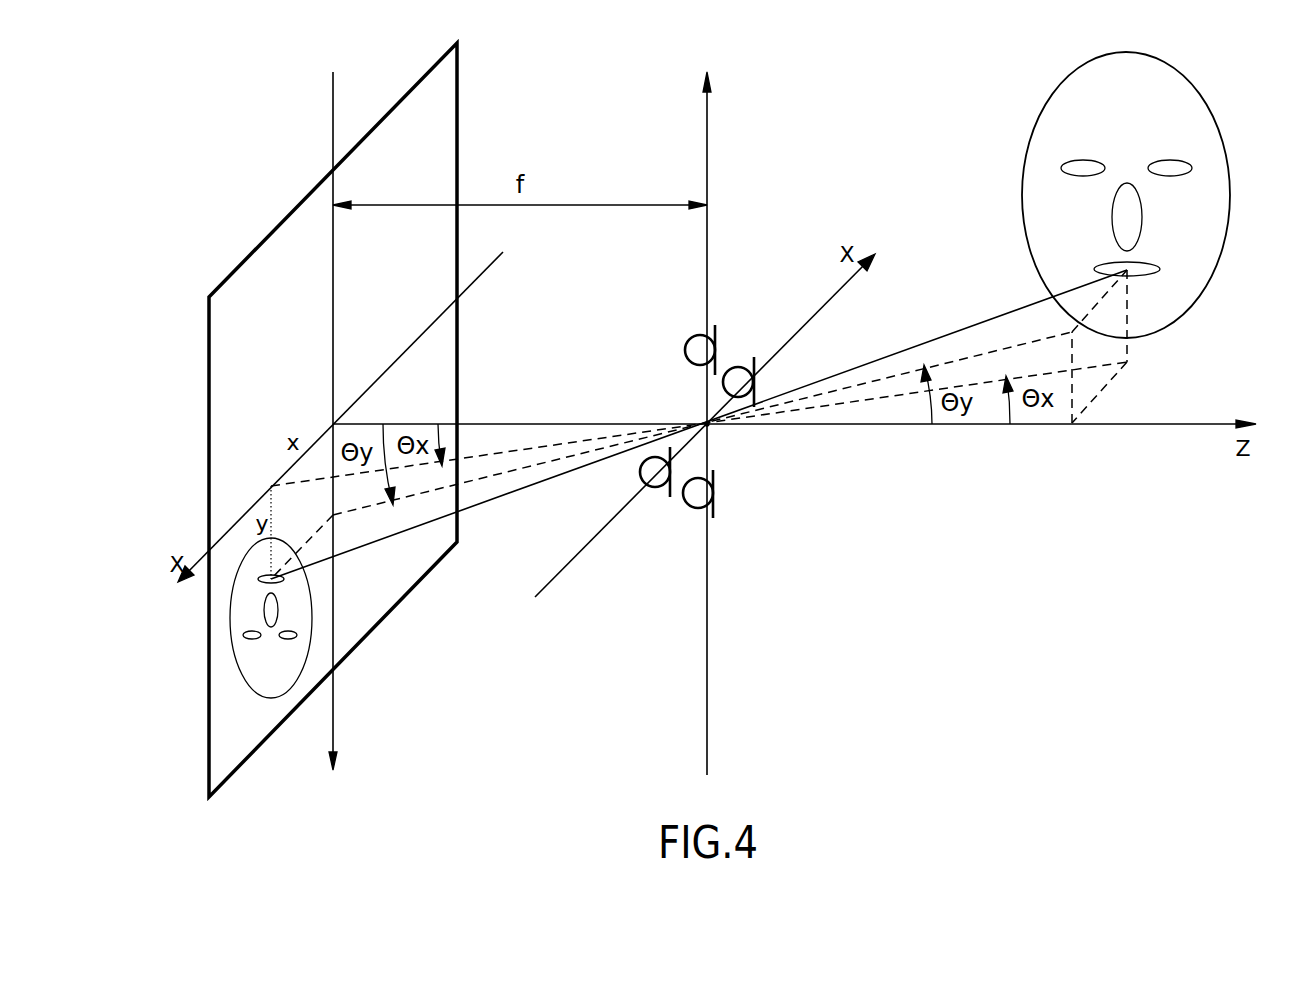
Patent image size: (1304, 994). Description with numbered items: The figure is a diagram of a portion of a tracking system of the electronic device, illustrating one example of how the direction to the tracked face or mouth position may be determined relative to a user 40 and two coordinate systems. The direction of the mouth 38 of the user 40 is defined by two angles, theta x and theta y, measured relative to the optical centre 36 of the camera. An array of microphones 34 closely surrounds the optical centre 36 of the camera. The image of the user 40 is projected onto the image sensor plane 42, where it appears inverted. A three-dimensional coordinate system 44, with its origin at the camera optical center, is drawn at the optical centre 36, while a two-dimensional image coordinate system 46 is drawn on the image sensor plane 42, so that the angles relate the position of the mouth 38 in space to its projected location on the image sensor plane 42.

The array of microphones 34 is at (746, 360).
The optical centre 36 is at (713, 428).
The mouth 38 is at (1158, 273).
The user 40 is at (1218, 130).
The image sensor plane 42 is at (458, 100).
The 3D coordinate system 44 is at (709, 146).
The 2D image coordinate system 46 is at (335, 697).